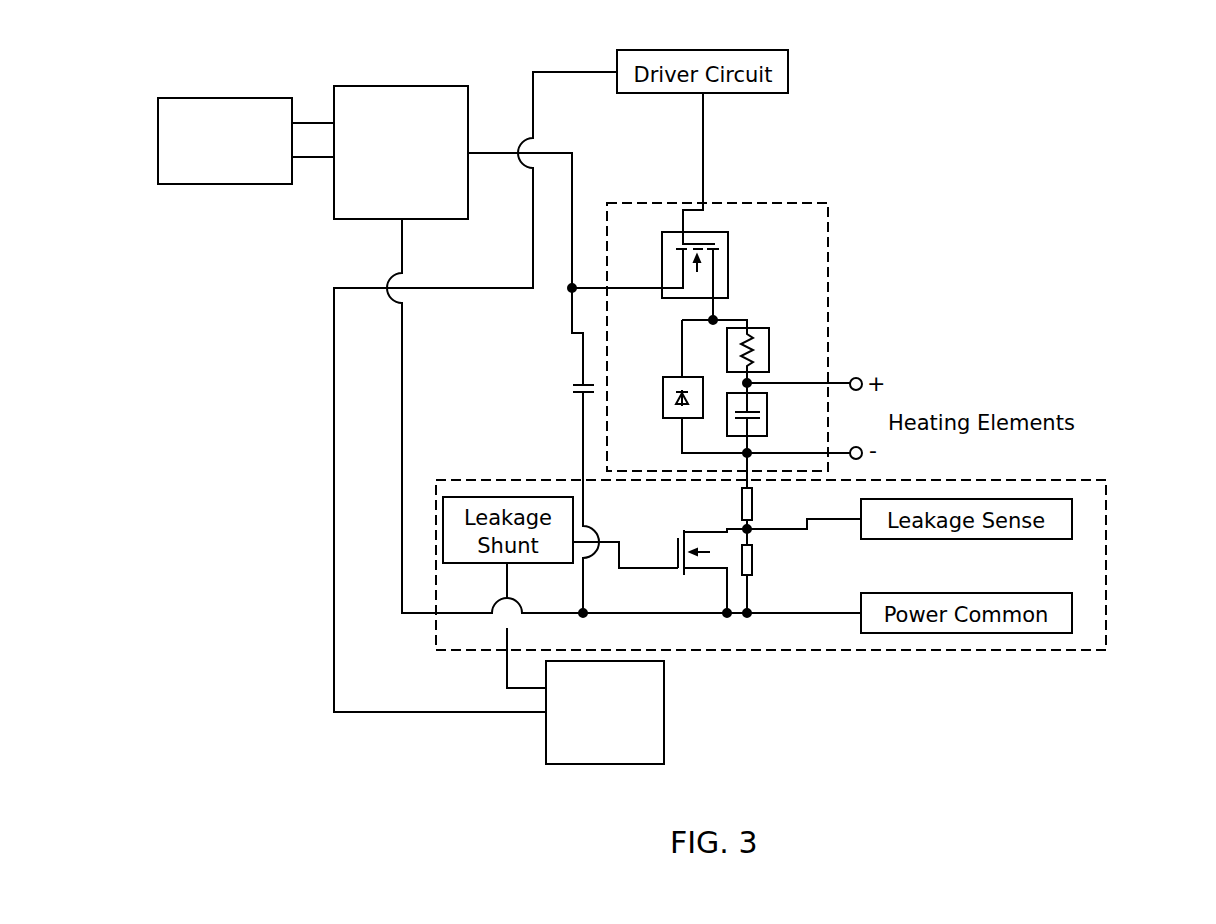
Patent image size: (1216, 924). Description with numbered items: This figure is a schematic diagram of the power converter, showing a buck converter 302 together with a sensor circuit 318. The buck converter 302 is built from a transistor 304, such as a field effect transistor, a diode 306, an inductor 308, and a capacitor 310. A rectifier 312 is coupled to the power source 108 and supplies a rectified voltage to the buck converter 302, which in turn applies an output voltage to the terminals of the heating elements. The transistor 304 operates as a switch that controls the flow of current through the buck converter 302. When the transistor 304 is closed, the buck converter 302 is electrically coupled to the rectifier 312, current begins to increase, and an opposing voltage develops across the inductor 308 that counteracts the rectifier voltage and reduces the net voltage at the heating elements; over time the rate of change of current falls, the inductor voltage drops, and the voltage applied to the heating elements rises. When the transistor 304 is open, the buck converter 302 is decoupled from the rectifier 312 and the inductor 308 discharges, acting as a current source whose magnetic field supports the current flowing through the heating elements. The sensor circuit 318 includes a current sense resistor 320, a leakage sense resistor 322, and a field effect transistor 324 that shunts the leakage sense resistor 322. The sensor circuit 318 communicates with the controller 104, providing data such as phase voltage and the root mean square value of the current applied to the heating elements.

The controller 104 is at (664, 705).
The power source 108 is at (205, 98).
The buck converter 302 is at (815, 203).
The transistor 304 is at (738, 247).
The diode 306 is at (677, 377).
The inductor 308 is at (755, 328).
The capacitor 310 is at (768, 402).
The rectifier 312 is at (390, 86).
The sensor circuit 318 is at (1106, 531).
The current sense resistor 320 is at (742, 504).
The leakage sense resistor 322 is at (752, 558).
The field effect transistor 324 is at (705, 580).